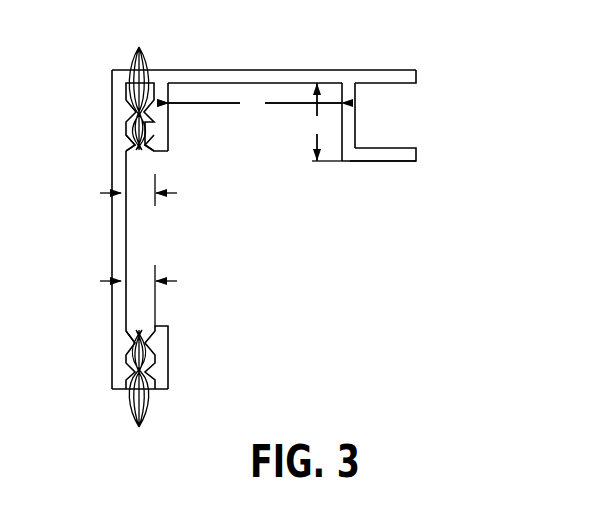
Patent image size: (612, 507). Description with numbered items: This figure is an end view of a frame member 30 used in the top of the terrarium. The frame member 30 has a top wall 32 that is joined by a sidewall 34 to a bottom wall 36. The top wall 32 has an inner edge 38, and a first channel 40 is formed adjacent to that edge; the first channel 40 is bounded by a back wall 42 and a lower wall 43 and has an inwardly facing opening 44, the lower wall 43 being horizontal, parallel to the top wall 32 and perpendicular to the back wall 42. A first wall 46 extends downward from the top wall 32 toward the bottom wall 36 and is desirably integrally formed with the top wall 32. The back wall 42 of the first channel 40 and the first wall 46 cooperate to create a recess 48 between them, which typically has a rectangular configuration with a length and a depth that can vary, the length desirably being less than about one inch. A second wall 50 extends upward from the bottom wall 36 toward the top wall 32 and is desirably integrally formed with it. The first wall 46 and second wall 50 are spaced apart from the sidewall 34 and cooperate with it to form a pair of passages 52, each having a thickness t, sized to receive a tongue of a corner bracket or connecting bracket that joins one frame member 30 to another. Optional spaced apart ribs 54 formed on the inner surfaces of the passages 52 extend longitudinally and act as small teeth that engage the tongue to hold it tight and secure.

The frame member 30 is at (410, 44).
The top wall 32 is at (225, 69).
The sidewall 34 is at (112, 235).
The bottom wall 36 is at (118, 390).
The inner edge 38 is at (416, 78).
The first channel 40 is at (424, 116).
The back wall 42 is at (340, 150).
The lower wall 43 is at (388, 161).
The inwardly facing opening 44 is at (400, 127).
The first wall 46 is at (168, 132).
The recess 48 is at (268, 127).
The second wall 50 is at (168, 342).
The passage 52 is at (142, 149).
The rib 54 is at (144, 239).